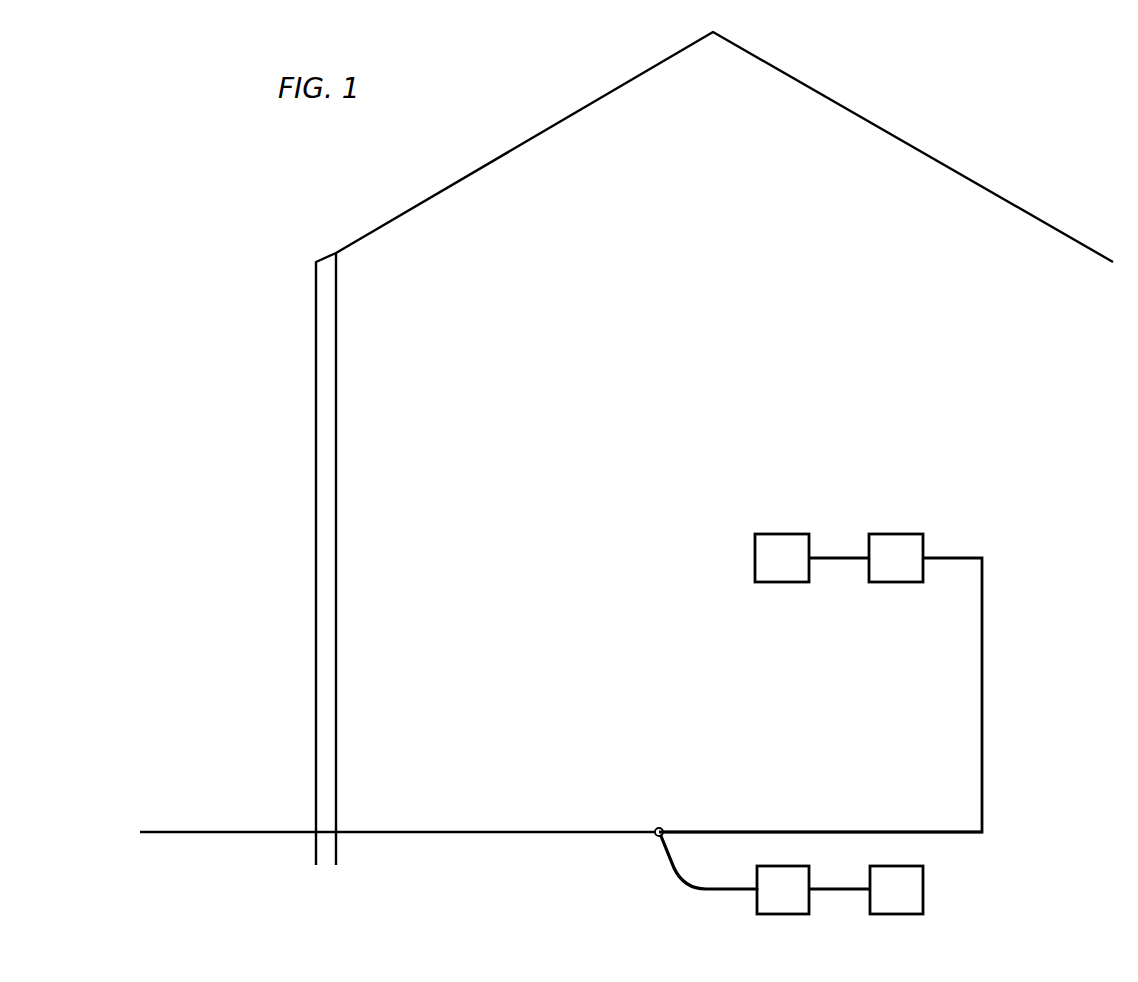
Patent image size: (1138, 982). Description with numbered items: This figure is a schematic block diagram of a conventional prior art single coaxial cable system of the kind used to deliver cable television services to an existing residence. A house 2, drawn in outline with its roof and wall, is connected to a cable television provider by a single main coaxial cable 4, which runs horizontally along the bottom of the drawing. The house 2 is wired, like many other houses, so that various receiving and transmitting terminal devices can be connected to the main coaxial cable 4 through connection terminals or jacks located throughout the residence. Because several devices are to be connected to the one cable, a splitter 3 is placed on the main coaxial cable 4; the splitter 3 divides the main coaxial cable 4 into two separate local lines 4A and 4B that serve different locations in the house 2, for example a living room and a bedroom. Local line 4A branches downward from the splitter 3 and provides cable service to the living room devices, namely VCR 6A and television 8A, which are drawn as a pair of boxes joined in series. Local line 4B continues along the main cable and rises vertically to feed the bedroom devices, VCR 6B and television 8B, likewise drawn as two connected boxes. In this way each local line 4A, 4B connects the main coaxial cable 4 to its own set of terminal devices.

The house 2 is at (393, 248).
The splitter 3 is at (659, 827).
The main coaxial cable 4 is at (287, 834).
The local line 4A is at (664, 844).
The local line 4B is at (713, 830).
The VCR 6A is at (755, 877).
The VCR 6B is at (895, 533).
The television 8A is at (925, 888).
The television 8B is at (780, 533).